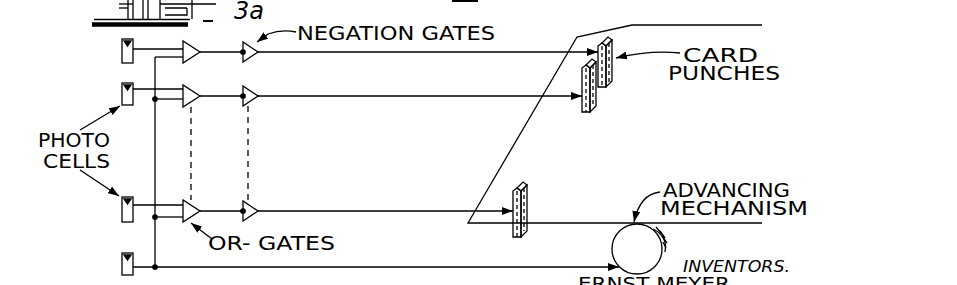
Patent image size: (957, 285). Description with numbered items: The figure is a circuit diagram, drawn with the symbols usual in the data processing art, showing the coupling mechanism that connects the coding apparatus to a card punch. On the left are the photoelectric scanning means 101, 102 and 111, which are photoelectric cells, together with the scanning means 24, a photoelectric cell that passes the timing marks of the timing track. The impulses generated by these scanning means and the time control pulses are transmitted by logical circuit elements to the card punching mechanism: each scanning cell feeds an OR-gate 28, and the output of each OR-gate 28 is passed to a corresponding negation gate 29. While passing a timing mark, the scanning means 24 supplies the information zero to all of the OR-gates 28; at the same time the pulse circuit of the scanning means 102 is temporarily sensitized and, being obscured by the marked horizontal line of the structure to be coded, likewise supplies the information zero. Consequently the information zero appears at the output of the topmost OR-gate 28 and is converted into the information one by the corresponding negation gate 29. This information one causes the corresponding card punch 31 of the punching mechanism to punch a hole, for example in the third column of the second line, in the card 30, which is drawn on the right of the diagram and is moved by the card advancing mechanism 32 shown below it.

The photoelectric scanning means 101 is at (122, 50).
The photoelectric scanning means 102 is at (122, 93).
The photoelectric scanning means 111 is at (122, 209).
The scanning means 24 is at (122, 266).
The OR-gate 28 is at (191, 54).
The negation gate 29 is at (259, 58).
The card 30 is at (524, 128).
The card punch 31 is at (590, 104).
The card advancing mechanism 32 is at (667, 248).